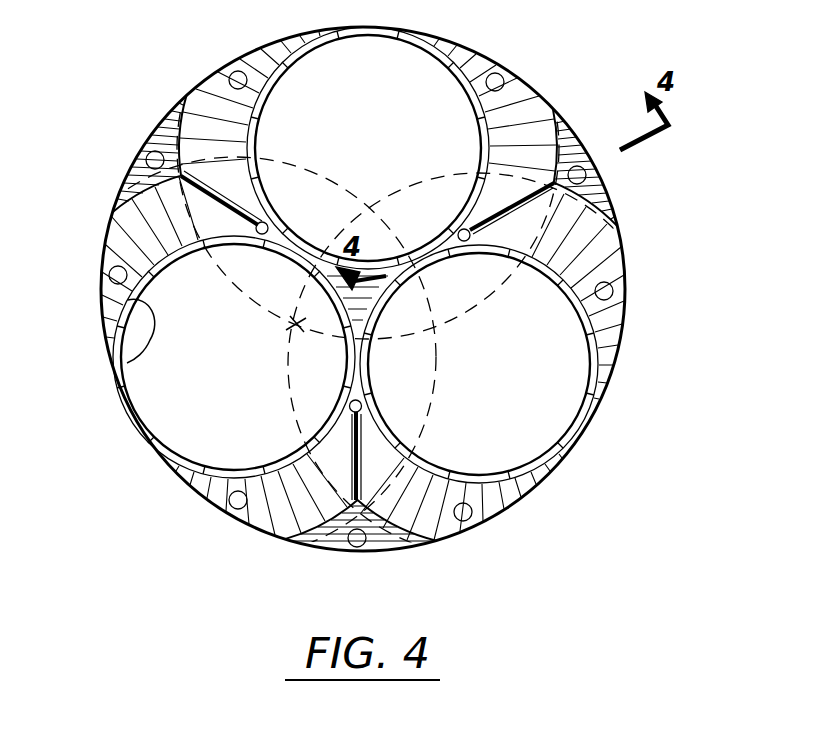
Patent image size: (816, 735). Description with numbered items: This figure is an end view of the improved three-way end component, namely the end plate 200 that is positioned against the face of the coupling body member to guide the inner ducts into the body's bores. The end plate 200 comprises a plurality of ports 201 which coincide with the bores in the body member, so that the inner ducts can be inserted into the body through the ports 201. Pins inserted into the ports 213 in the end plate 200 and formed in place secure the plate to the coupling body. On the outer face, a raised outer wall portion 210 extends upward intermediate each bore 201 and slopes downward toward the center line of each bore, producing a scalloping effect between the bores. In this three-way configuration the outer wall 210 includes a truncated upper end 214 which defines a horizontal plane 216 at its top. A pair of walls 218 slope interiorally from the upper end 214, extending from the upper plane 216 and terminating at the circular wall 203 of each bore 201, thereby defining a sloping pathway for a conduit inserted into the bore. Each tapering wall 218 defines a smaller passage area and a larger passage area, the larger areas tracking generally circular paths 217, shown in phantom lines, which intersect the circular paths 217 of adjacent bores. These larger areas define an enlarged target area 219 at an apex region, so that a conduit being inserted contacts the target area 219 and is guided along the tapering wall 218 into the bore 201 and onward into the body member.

The end plate 200 is at (522, 37).
The ports 201 is at (392, 146).
The circular wall of bore 203 is at (118, 356).
The raised outer wall portion 210 is at (173, 103).
The ports 213 is at (617, 288).
The truncated upper end 214 is at (130, 160).
The horizontal plane 216 is at (143, 138).
The circular paths 217 is at (462, 173).
The sloping walls 218 is at (218, 125).
The enlarged target area 219 is at (302, 324).